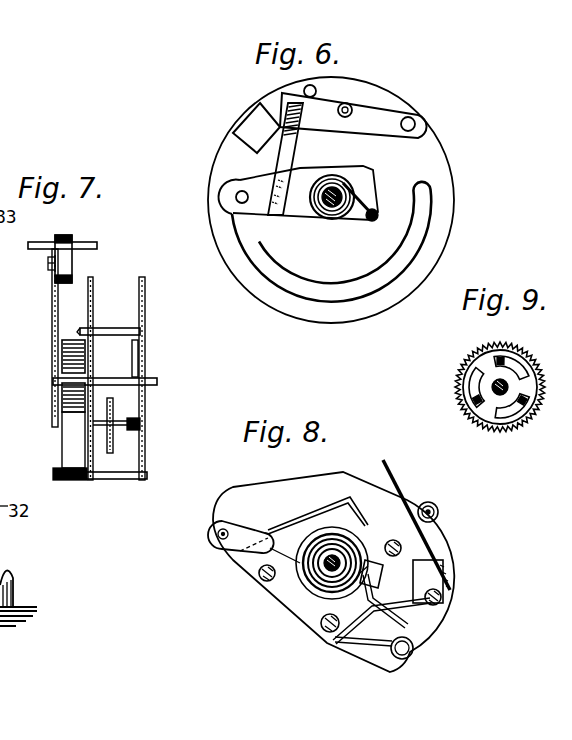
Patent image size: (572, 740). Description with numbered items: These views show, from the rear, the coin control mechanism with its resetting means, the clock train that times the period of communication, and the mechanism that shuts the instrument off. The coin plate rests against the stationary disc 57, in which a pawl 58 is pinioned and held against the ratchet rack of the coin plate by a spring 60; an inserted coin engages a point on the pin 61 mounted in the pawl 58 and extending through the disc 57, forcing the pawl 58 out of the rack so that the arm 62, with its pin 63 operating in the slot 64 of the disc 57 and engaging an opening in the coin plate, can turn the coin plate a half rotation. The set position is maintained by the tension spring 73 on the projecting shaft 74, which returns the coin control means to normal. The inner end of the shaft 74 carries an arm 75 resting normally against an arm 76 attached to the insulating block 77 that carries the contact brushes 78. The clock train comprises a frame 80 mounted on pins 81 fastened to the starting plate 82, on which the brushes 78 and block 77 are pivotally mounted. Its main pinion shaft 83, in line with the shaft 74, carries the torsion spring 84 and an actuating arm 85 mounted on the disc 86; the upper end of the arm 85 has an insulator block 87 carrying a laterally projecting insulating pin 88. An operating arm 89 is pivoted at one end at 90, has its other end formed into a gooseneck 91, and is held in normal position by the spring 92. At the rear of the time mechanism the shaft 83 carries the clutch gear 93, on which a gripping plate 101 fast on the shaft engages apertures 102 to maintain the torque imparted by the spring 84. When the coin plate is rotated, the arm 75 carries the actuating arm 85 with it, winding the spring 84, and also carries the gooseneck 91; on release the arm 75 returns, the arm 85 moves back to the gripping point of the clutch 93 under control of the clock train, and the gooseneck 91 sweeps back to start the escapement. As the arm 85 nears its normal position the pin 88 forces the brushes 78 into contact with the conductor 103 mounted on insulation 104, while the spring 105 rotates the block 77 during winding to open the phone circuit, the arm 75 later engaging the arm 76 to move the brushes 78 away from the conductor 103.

In FIG. 6, the stationary disc 57 is at (440, 157).
In FIG. 6, the pawl 58 is at (385, 118).
In FIG. 6, the spring 60 is at (283, 157).
In FIG. 6, the pin 61 is at (350, 110).
In FIG. 6, the arm 62 is at (282, 158).
In FIG. 6, the pin 63 is at (233, 212).
In FIG. 6, the slot 64 is at (357, 288).
In FIG. 6, the tension spring 73 is at (327, 221).
In FIG. 6, the shaft 74 is at (349, 190).
In FIG. 9, the clutch gear 93 is at (477, 348).
In FIG. 7, the clutch gear 93 is at (143, 393).
In FIG. 9, the gripping plate 101 is at (480, 363).
In FIG. 9, the apertures 102 is at (533, 410).
In FIG. 7, the frame 80 is at (147, 440).
In FIG. 7, the pins 81 is at (108, 330).
In FIG. 8, the pins 81 is at (263, 578).
In FIG. 8, the starting plate 82 is at (232, 490).
In FIG. 7, the main pinion shaft 83 is at (100, 377).
In FIG. 8, the main pinion shaft 83 is at (303, 577).
In FIG. 7, the torsion spring 84 is at (61, 355).
In FIG. 8, the torsion spring 84 is at (323, 590).
In FIG. 7, the actuating arm 85 is at (51, 302).
In FIG. 7, the disc 86 is at (56, 400).
In FIG. 7, the insulator block 87 is at (65, 265).
In FIG. 8, the insulator block 87 is at (230, 540).
In FIG. 7, the insulating pin 88 is at (88, 247).
In FIG. 8, the insulating pin 88 is at (212, 535).
In FIG. 8, the operating arm 89 is at (318, 510).
In FIG. 8, the pivot 90 is at (397, 647).
In FIG. 8, the gooseneck 91 is at (285, 525).
In FIG. 8, the spring 92 is at (413, 613).
In FIG. 8, the arm 75 is at (377, 563).
In FIG. 8, the arm 76 is at (442, 557).
In FIG. 8, the insulating block 77 is at (424, 583).
In FIG. 8, the contact brushes 78 is at (400, 477).
In FIG. 8, the conductor 103 is at (438, 505).
In FIG. 8, the insulation 104 is at (441, 515).
In FIG. 8, the spring 105 is at (334, 642).